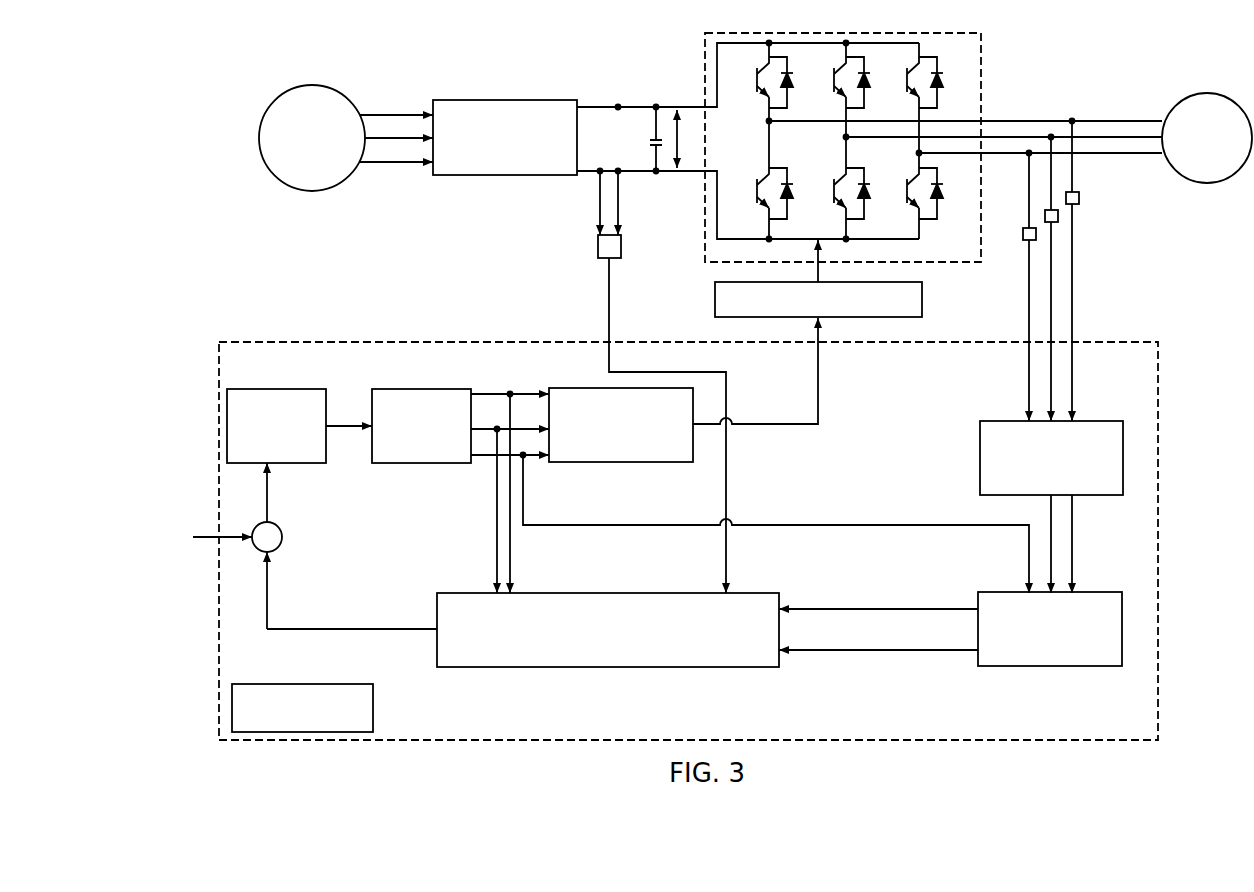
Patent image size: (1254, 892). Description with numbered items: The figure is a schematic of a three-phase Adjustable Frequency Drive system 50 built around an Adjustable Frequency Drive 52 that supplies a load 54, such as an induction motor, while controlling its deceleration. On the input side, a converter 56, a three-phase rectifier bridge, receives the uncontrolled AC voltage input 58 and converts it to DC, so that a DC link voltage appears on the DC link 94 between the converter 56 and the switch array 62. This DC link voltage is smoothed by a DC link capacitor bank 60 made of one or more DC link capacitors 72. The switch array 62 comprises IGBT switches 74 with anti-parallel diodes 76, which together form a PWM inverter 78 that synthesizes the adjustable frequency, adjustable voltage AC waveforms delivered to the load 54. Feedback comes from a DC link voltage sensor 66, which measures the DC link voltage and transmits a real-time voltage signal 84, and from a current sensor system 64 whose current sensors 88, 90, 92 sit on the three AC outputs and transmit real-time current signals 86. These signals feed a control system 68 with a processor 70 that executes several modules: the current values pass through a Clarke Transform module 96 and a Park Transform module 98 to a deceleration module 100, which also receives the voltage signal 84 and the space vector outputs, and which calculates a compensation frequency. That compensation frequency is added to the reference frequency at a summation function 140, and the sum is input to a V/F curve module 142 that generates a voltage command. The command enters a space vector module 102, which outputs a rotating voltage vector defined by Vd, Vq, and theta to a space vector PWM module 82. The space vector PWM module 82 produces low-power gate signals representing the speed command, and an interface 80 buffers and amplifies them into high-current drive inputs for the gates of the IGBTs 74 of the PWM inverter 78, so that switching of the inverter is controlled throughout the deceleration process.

The Adjustable Frequency Drive system 50 is at (213, 90).
The Adjustable Frequency Drive 52 is at (1000, 92).
The load 54 is at (1216, 93).
The converter 56 is at (452, 100).
The AC voltage input 58 is at (340, 93).
The DC link capacitor bank 60 is at (643, 138).
The switch array 62 is at (705, 53).
The current sensor system 64 is at (1089, 199).
The DC link voltage sensor 66 is at (621, 246).
The control system 68 is at (1158, 366).
The processor 70 is at (373, 702).
The DC link capacitor 72 is at (650, 144).
The IGBT switch 74 is at (757, 72).
The anti-parallel diode 76 is at (791, 90).
The PWM inverter 78 is at (789, 155).
The interface 80 is at (922, 300).
The space vector PWM module 82 is at (621, 462).
The real-time voltage signal 84 is at (620, 307).
The real-time current signal 86 is at (1079, 265).
The current sensor 88 is at (1023, 231).
The current sensor 90 is at (1046, 212).
The current sensor 92 is at (1067, 193).
The DC link 94 is at (683, 172).
The Clarke Transform module 96 is at (1088, 495).
The Park Transform module 98 is at (1080, 666).
The deceleration module 100 is at (604, 667).
The space vector module 102 is at (422, 463).
The summation function 140 is at (280, 547).
The V/F curve module 142 is at (302, 463).